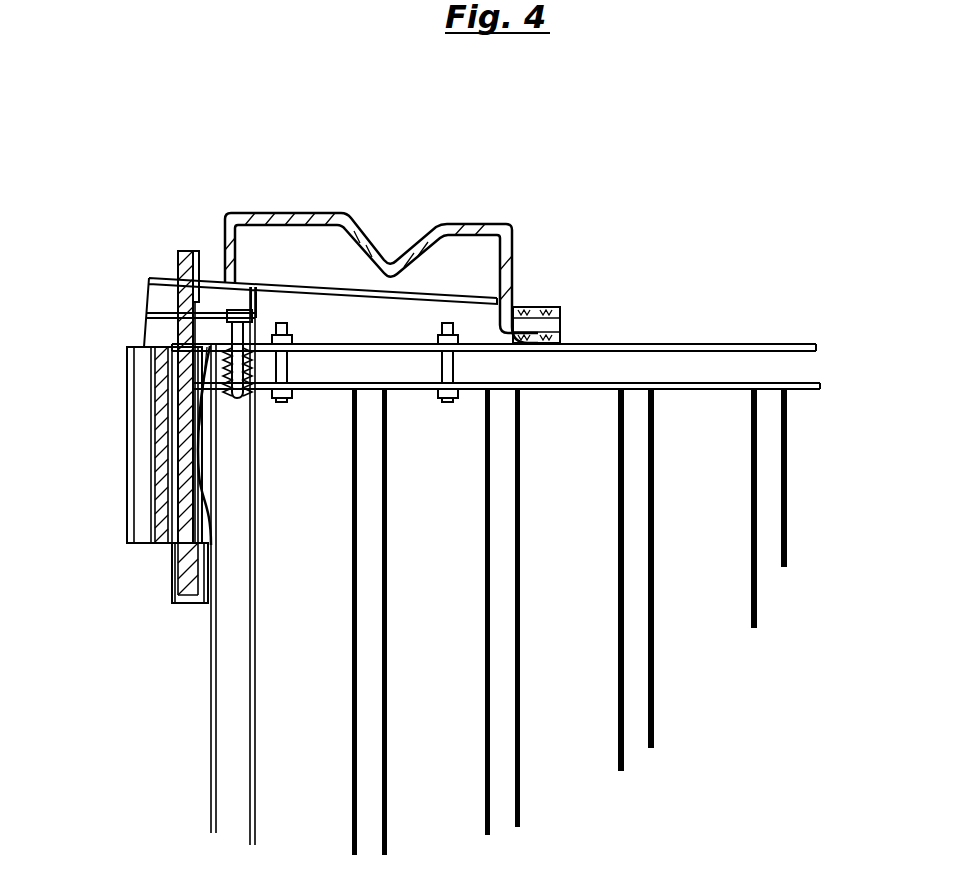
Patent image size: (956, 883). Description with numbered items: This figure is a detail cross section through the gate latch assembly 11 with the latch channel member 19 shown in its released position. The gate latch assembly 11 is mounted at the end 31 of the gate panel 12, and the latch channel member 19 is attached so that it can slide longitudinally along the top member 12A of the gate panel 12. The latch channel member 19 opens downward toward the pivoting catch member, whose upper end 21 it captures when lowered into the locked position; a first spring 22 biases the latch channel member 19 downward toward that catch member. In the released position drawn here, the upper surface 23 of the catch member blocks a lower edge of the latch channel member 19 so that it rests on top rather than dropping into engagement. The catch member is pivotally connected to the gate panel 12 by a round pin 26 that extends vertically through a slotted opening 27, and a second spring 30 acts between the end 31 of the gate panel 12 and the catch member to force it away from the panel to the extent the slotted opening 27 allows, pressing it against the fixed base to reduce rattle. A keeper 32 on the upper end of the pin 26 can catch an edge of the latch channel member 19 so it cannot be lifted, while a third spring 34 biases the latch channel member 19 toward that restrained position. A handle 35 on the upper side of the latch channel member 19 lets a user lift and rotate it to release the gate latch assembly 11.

The gate latch assembly 11 is at (187, 180).
The gate panel 12 is at (653, 642).
The top member 12A is at (680, 351).
The latch channel member 19 is at (148, 283).
The upper end 21 is at (126, 362).
The first spring 22 is at (197, 388).
The upper surface 23 is at (142, 347).
The round pin 26 is at (178, 258).
The slotted opening 27 is at (174, 535).
The second spring 30 is at (199, 486).
The end 31 is at (210, 703).
The keeper 32 is at (200, 256).
The third spring 34 is at (515, 308).
The handle 35 is at (297, 213).